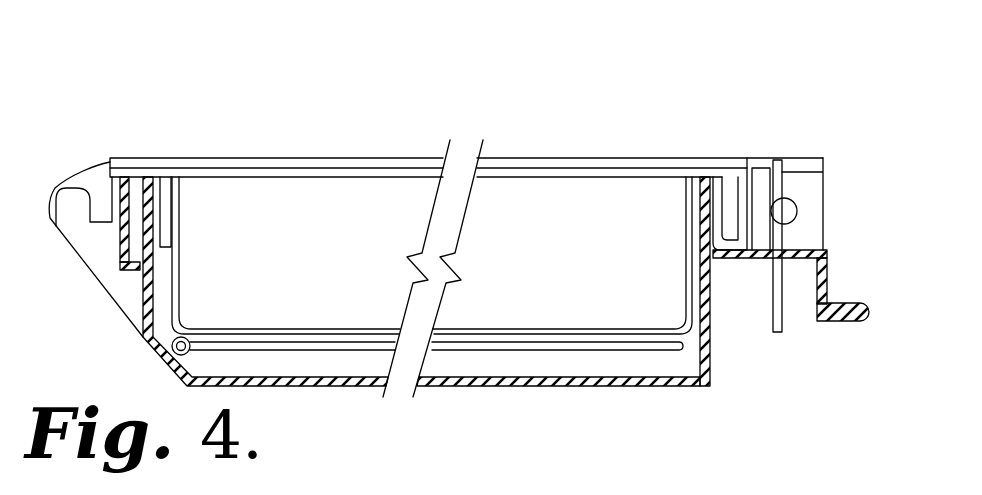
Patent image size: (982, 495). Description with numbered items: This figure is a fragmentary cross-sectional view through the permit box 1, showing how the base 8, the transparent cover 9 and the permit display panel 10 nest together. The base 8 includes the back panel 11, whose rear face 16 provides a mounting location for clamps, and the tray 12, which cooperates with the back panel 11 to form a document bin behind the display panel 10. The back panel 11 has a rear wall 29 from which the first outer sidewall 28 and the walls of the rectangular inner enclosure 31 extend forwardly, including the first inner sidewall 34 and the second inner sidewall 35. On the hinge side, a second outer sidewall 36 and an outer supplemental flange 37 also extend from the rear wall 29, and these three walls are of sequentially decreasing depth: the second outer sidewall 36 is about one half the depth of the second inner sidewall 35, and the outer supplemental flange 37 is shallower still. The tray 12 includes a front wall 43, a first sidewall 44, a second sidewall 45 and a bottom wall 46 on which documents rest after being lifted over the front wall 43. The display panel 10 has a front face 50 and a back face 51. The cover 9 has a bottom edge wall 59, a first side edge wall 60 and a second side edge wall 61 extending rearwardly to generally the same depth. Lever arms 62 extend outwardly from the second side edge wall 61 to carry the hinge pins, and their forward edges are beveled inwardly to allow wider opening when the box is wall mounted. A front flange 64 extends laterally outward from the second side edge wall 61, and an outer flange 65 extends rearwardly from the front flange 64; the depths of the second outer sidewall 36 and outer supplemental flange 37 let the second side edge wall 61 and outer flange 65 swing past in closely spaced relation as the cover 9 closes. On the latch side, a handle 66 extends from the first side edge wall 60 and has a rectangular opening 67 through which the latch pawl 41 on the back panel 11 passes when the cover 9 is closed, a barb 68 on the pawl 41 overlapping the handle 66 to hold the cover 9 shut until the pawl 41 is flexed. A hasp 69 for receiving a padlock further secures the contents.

The permit box 1 is at (535, 78).
The back panel assembly or base 8 is at (546, 152).
The transparent cover 9 is at (638, 392).
The permit display panel 10 is at (299, 358).
The back panel 11 is at (373, 157).
The tray 12 is at (565, 330).
The rear face 16 is at (267, 157).
The first outer sidewall 28 is at (760, 186).
The rear wall 29 is at (272, 180).
The inner enclosure 31 is at (186, 182).
The first inner sidewall 34 is at (698, 210).
The second inner sidewall 35 is at (170, 217).
The second outer sidewall 36 is at (130, 183).
The outer supplemental flange 37 is at (110, 203).
The latch pawl 41 is at (788, 184).
The front wall 43 is at (310, 332).
The first sidewall 44 is at (690, 288).
The second sidewall 45 is at (180, 293).
The bottom wall 46 is at (568, 247).
The front face 50 is at (512, 352).
The back face 51 is at (487, 340).
The bottom edge wall 59 is at (592, 362).
The first side edge wall 60 is at (712, 340).
The second side edge wall 61 is at (157, 259).
The lever arms 62 is at (128, 323).
The front flange 64 is at (130, 282).
The outer flange 65 is at (130, 262).
The handle 66 is at (853, 297).
The rectangular opening 67 is at (798, 250).
The barb 68 is at (770, 260).
The hasp 69 is at (832, 184).